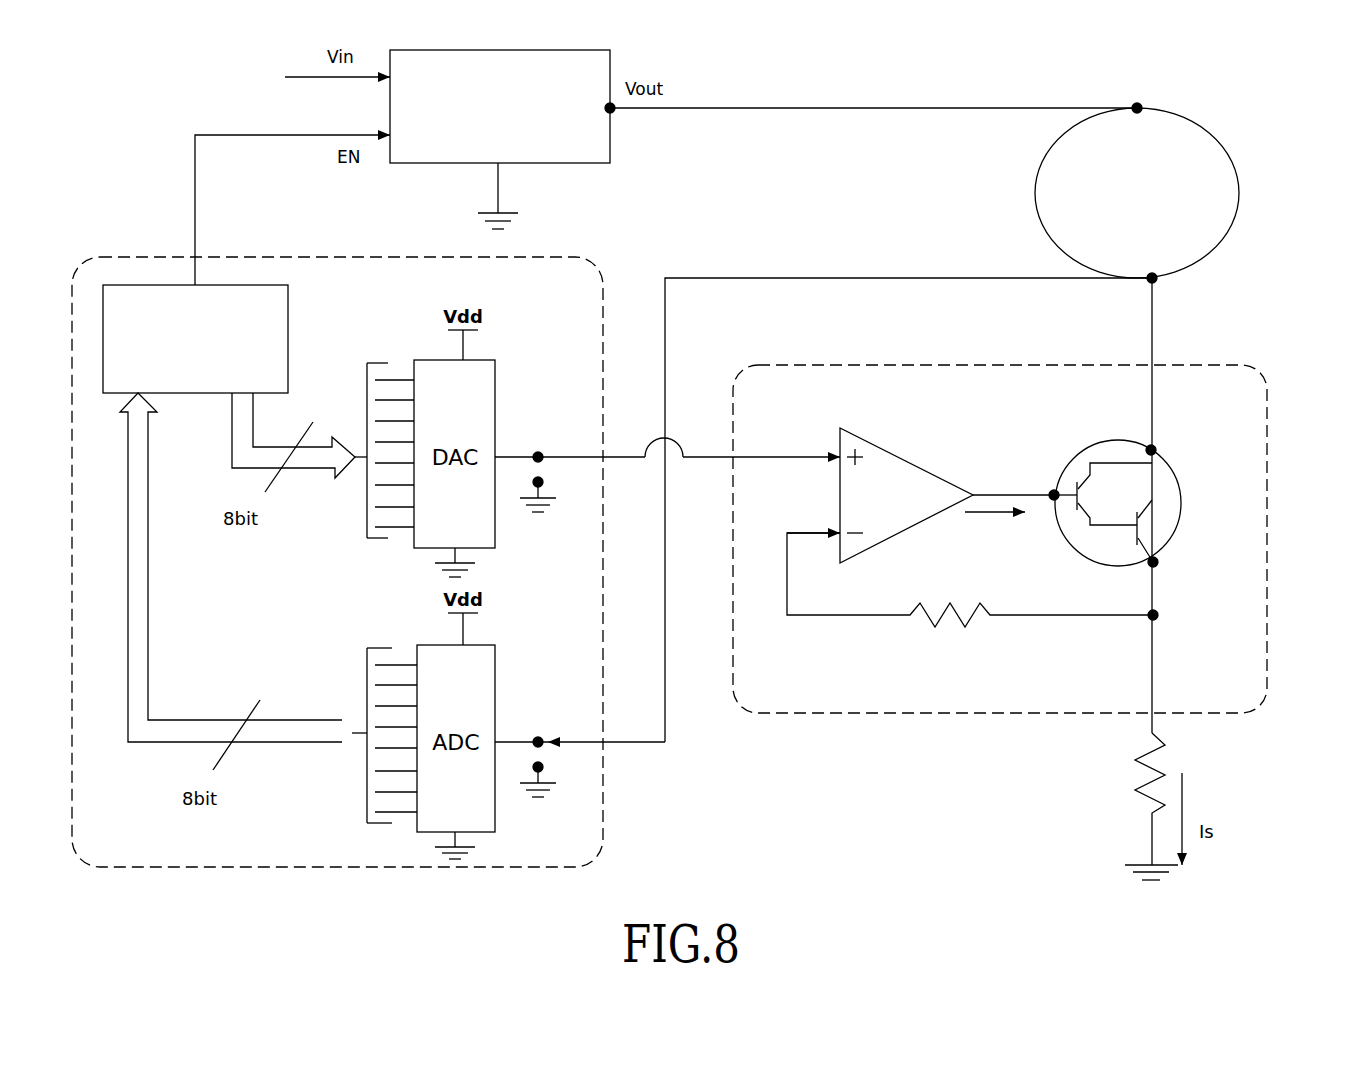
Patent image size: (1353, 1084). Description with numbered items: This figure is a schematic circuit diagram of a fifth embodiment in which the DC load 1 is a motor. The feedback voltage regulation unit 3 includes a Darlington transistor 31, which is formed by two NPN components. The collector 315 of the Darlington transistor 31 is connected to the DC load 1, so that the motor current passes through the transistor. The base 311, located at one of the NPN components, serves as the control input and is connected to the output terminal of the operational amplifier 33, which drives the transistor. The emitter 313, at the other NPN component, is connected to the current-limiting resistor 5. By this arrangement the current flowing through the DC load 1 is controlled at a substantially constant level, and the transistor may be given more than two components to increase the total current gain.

The DC load 1 is at (1152, 167).
The feedback voltage regulation unit 3 is at (1032, 513).
The Darlington transistor 31 is at (1133, 535).
The operational amplifier 33 is at (906, 478).
The base 311 is at (1044, 533).
The emitter 313 is at (1104, 620).
The collector 315 is at (1182, 420).
The current-limiting resistor 5 is at (1186, 804).